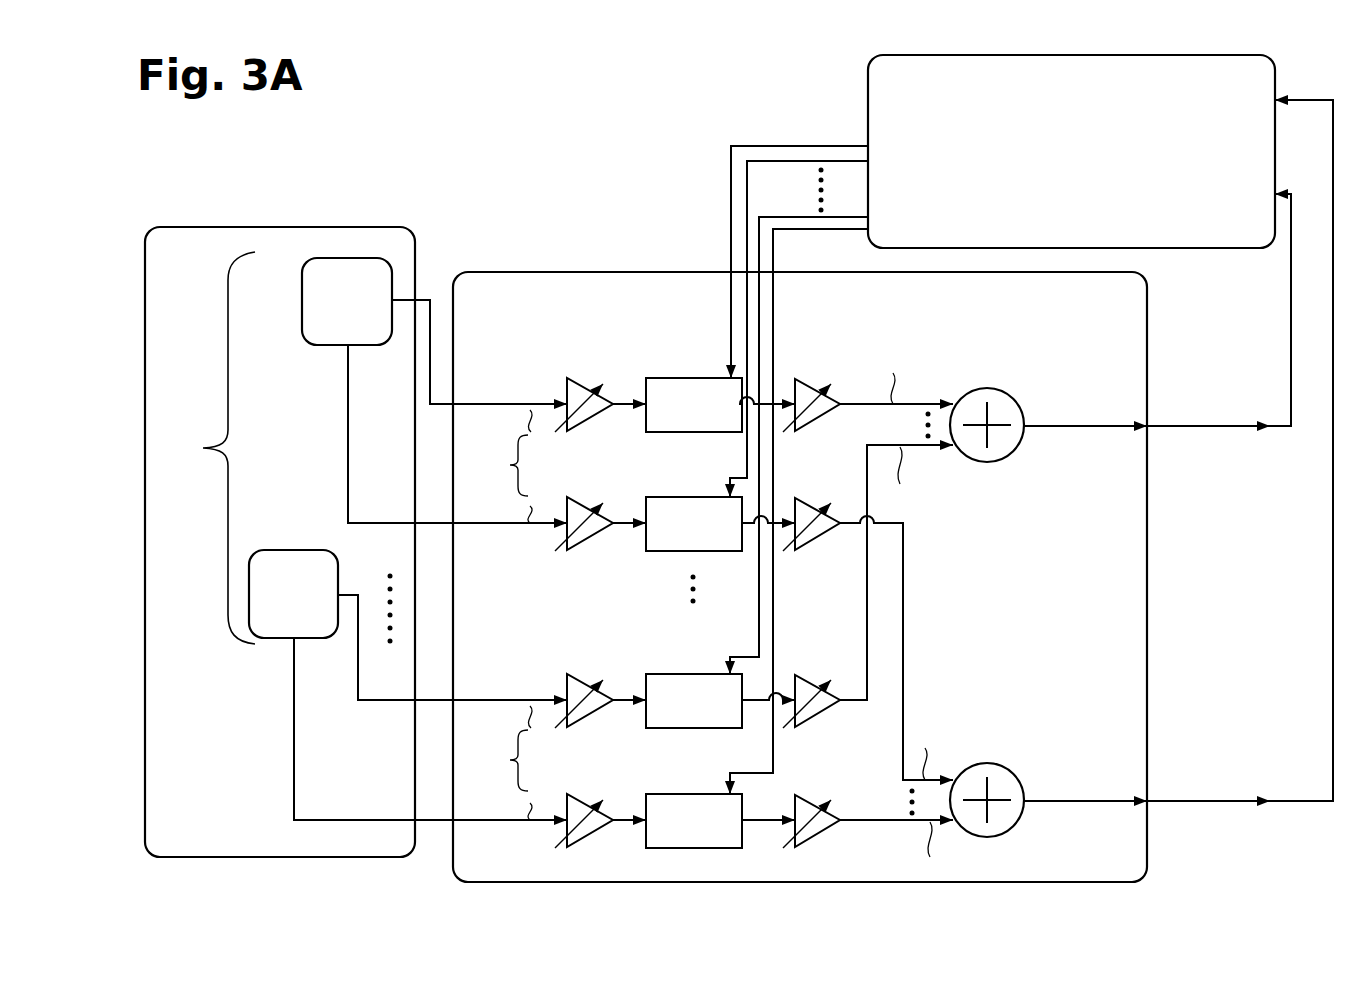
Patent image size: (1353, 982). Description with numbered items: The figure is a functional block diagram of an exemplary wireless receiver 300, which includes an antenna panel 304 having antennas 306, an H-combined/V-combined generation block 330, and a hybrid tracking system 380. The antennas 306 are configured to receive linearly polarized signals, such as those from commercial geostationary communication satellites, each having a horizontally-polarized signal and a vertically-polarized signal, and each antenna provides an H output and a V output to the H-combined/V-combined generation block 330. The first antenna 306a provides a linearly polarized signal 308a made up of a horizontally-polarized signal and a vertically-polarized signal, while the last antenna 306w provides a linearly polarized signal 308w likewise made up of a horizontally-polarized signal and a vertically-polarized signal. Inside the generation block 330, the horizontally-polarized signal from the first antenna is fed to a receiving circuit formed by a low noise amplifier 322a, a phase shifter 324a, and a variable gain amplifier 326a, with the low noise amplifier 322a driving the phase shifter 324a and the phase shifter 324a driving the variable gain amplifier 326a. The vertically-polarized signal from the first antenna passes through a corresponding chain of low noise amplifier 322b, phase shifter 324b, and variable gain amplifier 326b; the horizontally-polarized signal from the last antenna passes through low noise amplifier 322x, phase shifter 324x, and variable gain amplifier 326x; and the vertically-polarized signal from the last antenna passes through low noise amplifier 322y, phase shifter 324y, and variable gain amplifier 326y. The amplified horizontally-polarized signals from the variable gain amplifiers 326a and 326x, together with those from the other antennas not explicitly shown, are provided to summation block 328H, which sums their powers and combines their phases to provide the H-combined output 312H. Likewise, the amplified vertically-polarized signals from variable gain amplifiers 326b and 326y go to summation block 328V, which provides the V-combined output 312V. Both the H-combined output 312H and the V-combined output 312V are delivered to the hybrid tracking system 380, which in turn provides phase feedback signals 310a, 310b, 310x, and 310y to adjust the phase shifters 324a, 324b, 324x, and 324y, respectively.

The wireless receiver 300 is at (260, 173).
The antenna panel 304 is at (225, 820).
The antennas 306 is at (207, 448).
The antenna 306a is at (372, 311).
The antenna 306w is at (319, 604).
The linearly polarized signal 308a is at (492, 465).
The linearly polarized signal 308w is at (491, 760).
The phase feedback signal 310a is at (740, 146).
The phase feedback signal 310b is at (787, 161).
The phase feedback signal 310x is at (797, 217).
The phase feedback signal 310y is at (843, 229).
The H-combined output 312H is at (1230, 426).
The V-combined output 312V is at (1230, 801).
The low noise amplifier 322a is at (586, 389).
The low noise amplifier 322b is at (586, 508).
The low noise amplifier 322x is at (586, 685).
The low noise amplifier 322y is at (586, 805).
The phase shifter 324a is at (693, 378).
The phase shifter 324b is at (693, 497).
The phase shifter 324x is at (693, 674).
The phase shifter 324y is at (693, 794).
The variable gain amplifier 326a is at (807, 390).
The variable gain amplifier 326b is at (807, 509).
The variable gain amplifier 326x is at (807, 686).
The variable gain amplifier 326y is at (807, 806).
The summation block 328H is at (987, 388).
The summation block 328V is at (987, 763).
The H-combined/V-combined generation block 330 is at (1097, 322).
The hybrid tracking system 380 is at (1090, 152).